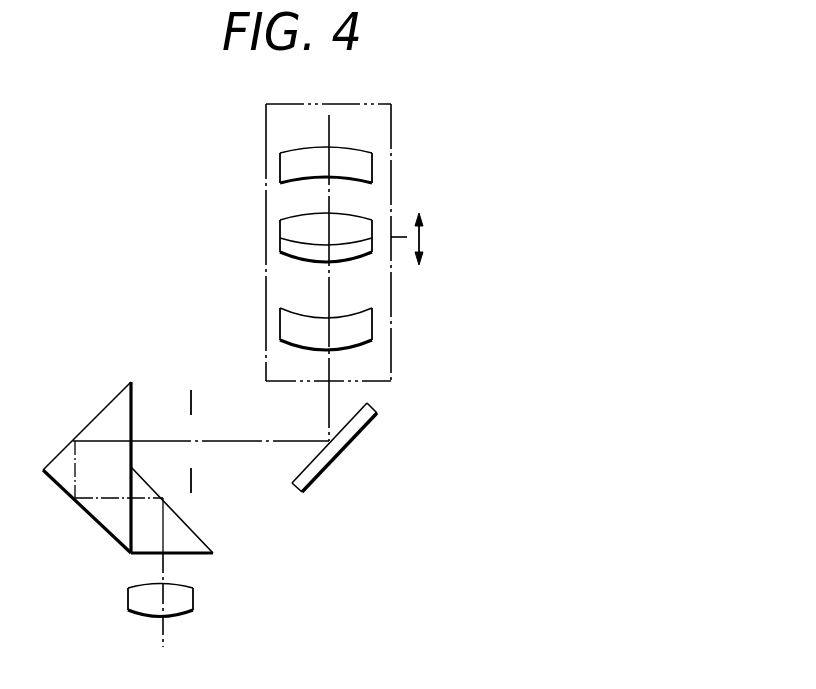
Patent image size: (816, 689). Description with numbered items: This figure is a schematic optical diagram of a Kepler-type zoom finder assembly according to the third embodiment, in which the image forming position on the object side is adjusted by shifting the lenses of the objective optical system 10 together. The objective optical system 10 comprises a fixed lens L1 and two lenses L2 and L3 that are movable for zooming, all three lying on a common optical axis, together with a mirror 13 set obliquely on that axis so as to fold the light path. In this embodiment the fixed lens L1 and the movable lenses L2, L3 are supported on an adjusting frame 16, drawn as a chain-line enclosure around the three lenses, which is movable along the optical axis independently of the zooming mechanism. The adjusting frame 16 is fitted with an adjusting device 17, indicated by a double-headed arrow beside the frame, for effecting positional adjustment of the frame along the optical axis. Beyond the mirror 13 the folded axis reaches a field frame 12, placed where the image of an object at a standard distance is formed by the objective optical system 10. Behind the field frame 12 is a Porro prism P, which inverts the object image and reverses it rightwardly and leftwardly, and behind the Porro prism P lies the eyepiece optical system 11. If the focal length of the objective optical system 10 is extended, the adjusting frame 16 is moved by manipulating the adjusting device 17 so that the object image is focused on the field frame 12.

The objective optical system 10 is at (400, 103).
The adjusting frame 16 is at (391, 142).
The fixed lens L1 is at (288, 167).
The movable lens L2 is at (281, 229).
The movable lens L3 is at (283, 321).
The adjusting device 17 is at (426, 236).
The field frame 12 is at (192, 398).
The mirror 13 is at (367, 428).
The Porro prism P is at (112, 517).
The eyepiece optical system 11 is at (185, 600).